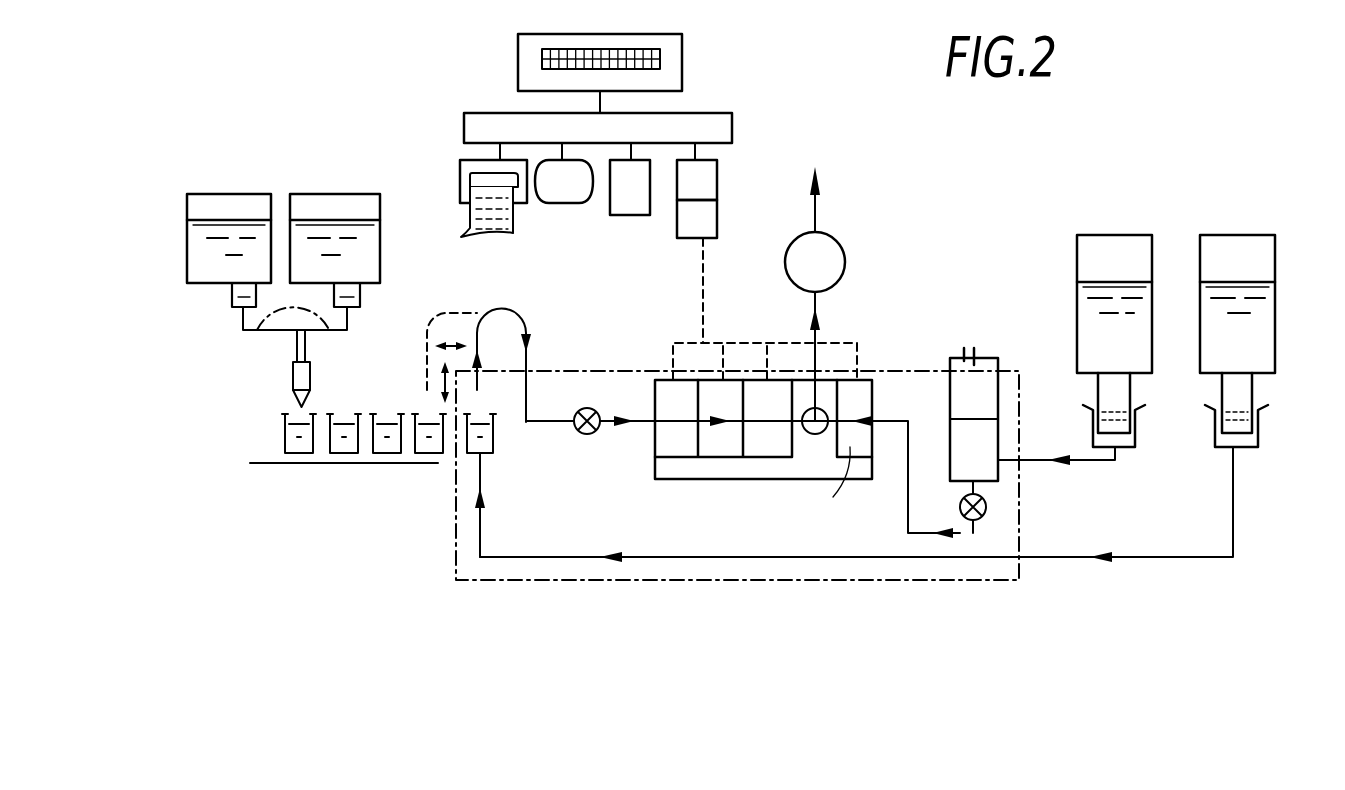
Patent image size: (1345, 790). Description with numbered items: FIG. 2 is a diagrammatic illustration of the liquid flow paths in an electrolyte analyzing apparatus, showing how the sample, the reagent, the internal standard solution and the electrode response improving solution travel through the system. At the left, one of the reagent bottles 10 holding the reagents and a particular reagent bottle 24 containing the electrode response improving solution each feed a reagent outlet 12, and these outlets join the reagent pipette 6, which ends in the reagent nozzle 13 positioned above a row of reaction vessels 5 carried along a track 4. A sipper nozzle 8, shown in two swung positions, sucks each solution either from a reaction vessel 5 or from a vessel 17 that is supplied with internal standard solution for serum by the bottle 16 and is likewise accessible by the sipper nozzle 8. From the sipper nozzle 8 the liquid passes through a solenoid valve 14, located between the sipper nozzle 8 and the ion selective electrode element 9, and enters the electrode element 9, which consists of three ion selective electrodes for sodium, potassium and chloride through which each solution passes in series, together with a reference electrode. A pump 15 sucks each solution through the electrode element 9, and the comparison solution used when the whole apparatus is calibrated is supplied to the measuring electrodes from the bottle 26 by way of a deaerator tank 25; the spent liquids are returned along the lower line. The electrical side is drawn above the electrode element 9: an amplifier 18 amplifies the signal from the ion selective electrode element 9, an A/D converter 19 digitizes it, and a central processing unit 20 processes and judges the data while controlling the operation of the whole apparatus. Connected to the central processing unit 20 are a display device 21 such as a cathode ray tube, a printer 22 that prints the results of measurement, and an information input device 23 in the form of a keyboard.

The sample conveyor track 4 is at (320, 463).
The reaction vessels 5 is at (285, 428).
The reagent pipette 6 is at (313, 333).
The sipper nozzle 8 is at (520, 317).
The ion selective electrode element 9 is at (747, 479).
The reagent bottle 10 is at (335, 205).
The reagent outlet 12 is at (232, 298).
The reagent nozzle 13 is at (293, 378).
The solenoid valve 14 is at (592, 433).
The pump 15 is at (835, 260).
The bottle for internal standard solution 16 is at (1267, 263).
The vessel for internal standard solution 17 is at (495, 442).
The amplifier 18 is at (718, 222).
The A/D converter 19 is at (718, 178).
The central processing unit 20 is at (640, 207).
The display device 21 is at (570, 203).
The printer 22 is at (460, 180).
The information input device 23 is at (682, 56).
The particular reagent bottle 24 is at (240, 203).
The deaerator tank 25 is at (1000, 358).
The bottle for comparison solution 26 is at (1083, 260).